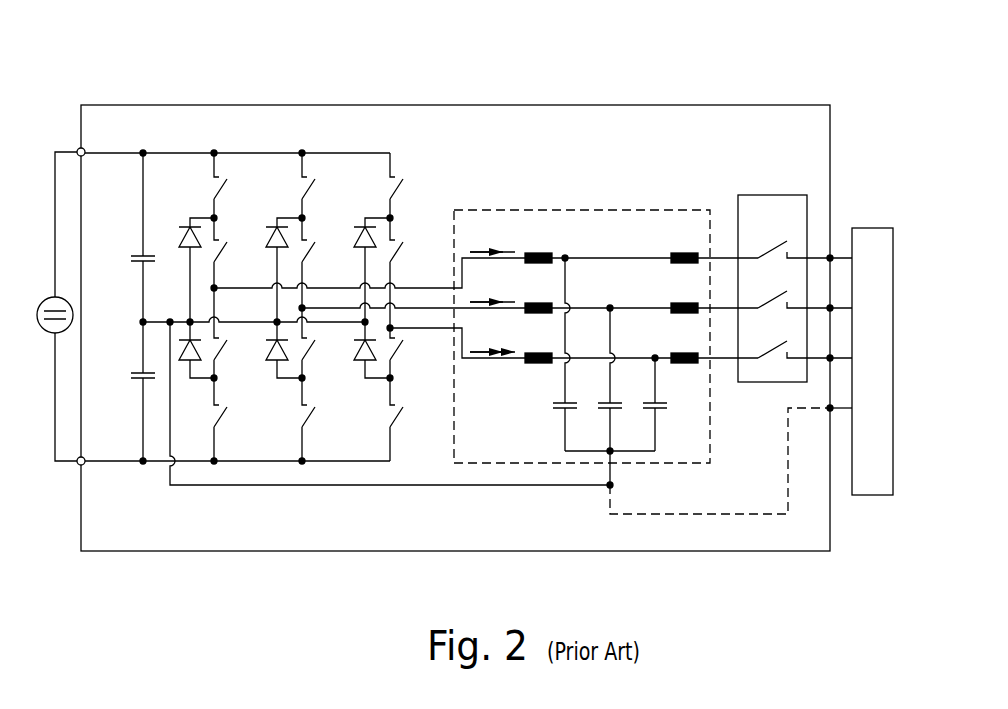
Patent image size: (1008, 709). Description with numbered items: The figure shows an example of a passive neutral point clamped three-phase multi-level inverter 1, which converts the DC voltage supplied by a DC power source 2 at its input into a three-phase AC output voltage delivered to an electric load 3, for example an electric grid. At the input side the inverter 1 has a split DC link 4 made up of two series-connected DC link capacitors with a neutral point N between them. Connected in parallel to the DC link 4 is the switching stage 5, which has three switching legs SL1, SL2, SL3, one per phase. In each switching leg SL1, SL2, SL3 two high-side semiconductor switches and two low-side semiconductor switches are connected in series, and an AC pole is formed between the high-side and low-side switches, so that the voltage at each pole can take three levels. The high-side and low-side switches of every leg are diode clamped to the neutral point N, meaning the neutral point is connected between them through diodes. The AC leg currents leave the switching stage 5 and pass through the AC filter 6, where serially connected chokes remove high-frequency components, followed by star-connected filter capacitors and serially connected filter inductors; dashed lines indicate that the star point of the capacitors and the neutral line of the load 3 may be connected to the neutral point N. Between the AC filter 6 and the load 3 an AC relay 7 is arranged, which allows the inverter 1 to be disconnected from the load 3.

The inverter 1 is at (655, 105).
The DC power source 2 is at (48, 292).
The electric load 3 is at (863, 362).
The DC link 4 is at (110, 480).
The switching stage 5 is at (352, 330).
The AC filter 6 is at (521, 205).
The AC relay 7 is at (772, 196).
The first switching leg SL1 is at (212, 140).
The second switching leg SL2 is at (298, 140).
The third switching leg SL3 is at (390, 140).